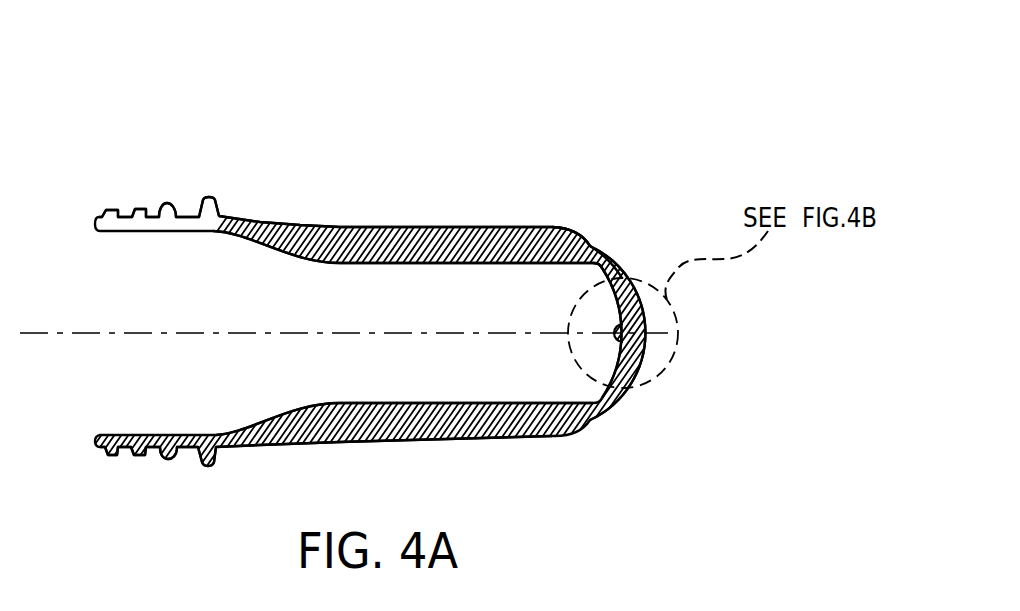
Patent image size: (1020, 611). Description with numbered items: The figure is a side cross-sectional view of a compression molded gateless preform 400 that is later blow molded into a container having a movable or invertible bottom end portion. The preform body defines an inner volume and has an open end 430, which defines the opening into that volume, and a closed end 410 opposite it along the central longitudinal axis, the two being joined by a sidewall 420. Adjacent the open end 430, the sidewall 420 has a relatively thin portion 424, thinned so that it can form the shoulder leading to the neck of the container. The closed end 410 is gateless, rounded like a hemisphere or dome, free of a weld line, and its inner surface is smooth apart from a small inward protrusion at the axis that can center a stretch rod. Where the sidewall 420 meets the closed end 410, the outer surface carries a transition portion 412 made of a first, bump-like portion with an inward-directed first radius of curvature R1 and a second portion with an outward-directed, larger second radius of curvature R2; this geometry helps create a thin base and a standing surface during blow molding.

The compression molded gateless preform 400 is at (340, 158).
The closed end 410 is at (642, 473).
The transition portion 412 is at (575, 238).
The sidewall 420 is at (420, 226).
The relatively thin portion 424 is at (293, 226).
The open end 430 is at (182, 207).
The first radius of curvature R1 is at (562, 246).
The second radius of curvature R2 is at (594, 240).